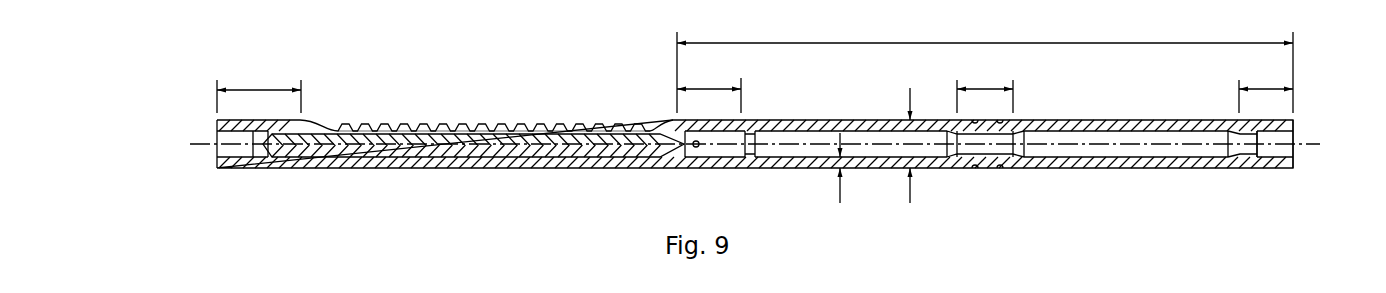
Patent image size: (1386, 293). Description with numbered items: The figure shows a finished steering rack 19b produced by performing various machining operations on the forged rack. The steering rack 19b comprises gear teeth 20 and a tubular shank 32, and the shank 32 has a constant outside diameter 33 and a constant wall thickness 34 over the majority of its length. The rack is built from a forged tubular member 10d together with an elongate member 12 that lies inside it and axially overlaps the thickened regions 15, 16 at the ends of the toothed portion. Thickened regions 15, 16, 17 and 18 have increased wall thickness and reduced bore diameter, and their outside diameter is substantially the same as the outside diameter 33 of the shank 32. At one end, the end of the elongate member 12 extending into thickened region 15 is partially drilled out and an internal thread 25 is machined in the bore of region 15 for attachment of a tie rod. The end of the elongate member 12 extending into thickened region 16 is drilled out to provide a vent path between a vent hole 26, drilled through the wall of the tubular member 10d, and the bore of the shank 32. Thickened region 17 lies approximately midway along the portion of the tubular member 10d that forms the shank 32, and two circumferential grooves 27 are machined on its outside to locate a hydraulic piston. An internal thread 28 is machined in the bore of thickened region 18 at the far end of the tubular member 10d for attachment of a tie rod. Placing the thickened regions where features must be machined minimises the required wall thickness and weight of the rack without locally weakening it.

The forged tubular member 10d is at (1083, 166).
The elongate member 12 is at (437, 149).
The thickened region 15 is at (263, 89).
The thickened region 16 is at (717, 89).
The thickened region 17 is at (990, 89).
The thickened region 18 is at (1267, 89).
The steering rack 19b is at (494, 80).
The gear teeth 20 is at (577, 124).
The internal thread 25 is at (218, 162).
The vent hole 26 is at (699, 147).
The grooves 27 is at (977, 170).
The internal thread 28 is at (1278, 162).
The tubular shank 32 is at (873, 43).
The outside diameter 33 is at (910, 196).
The wall thickness 34 is at (840, 196).